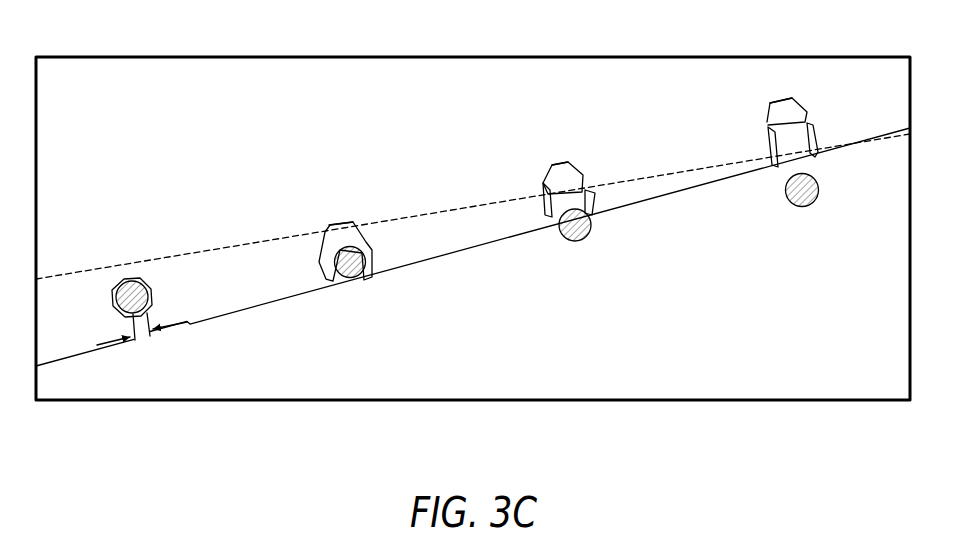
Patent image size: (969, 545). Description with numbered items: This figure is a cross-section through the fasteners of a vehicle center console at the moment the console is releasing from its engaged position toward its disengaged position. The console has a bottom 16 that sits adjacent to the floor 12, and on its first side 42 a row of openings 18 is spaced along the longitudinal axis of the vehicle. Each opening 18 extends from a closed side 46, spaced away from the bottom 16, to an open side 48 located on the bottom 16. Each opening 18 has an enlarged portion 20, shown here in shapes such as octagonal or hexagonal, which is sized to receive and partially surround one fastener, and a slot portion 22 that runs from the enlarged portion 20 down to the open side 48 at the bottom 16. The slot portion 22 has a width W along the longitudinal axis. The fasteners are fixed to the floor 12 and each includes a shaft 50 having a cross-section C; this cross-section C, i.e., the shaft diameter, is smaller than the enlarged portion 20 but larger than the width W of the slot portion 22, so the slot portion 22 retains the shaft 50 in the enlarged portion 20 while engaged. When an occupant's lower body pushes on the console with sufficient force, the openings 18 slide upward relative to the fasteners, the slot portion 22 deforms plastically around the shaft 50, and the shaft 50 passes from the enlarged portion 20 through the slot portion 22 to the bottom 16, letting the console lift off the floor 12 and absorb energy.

The floor 12 is at (449, 211).
The bottom 16 is at (257, 313).
The openings 18 is at (464, 229).
The enlarged portion 20 is at (474, 193).
The slot portion 22 is at (130, 332).
The first side 42 is at (214, 136).
The closed side 46 is at (136, 278).
The open side 48 is at (143, 345).
The shaft 50 is at (467, 254).
The cross-section C is at (143, 295).
The width W is at (188, 324).